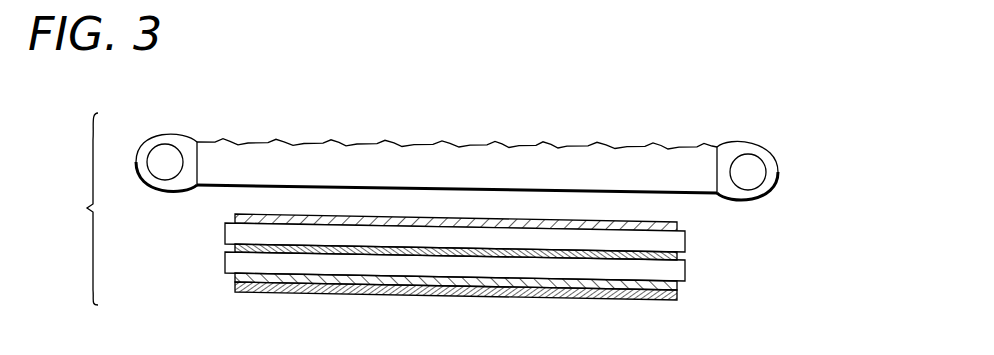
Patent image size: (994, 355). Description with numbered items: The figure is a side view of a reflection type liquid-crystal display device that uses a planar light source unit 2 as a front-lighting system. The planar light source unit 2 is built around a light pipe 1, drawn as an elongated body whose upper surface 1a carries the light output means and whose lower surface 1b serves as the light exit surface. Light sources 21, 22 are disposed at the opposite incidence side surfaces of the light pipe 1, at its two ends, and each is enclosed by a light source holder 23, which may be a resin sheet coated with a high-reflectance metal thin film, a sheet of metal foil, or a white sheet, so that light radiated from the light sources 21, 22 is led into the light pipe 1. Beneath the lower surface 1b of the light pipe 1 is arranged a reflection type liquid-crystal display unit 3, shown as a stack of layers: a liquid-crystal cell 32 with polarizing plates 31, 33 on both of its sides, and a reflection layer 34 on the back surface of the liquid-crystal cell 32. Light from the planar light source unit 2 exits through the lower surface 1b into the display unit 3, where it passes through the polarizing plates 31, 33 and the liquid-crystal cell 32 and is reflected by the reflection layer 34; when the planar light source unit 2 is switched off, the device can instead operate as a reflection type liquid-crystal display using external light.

The light pipe 1 is at (556, 142).
The upper surface 1a is at (213, 142).
The lower surface 1b is at (214, 188).
The planar light source unit 2 is at (249, 98).
The reflection type liquid-crystal display unit 3 is at (750, 215).
The light source 21 is at (163, 164).
The light source 22 is at (752, 178).
The light source holder 23 is at (172, 132).
The polarizing plate 31 is at (680, 226).
The liquid-crystal cell 32 is at (685, 232).
The polarizing plate 33 is at (680, 286).
The reflection layer 34 is at (680, 297).